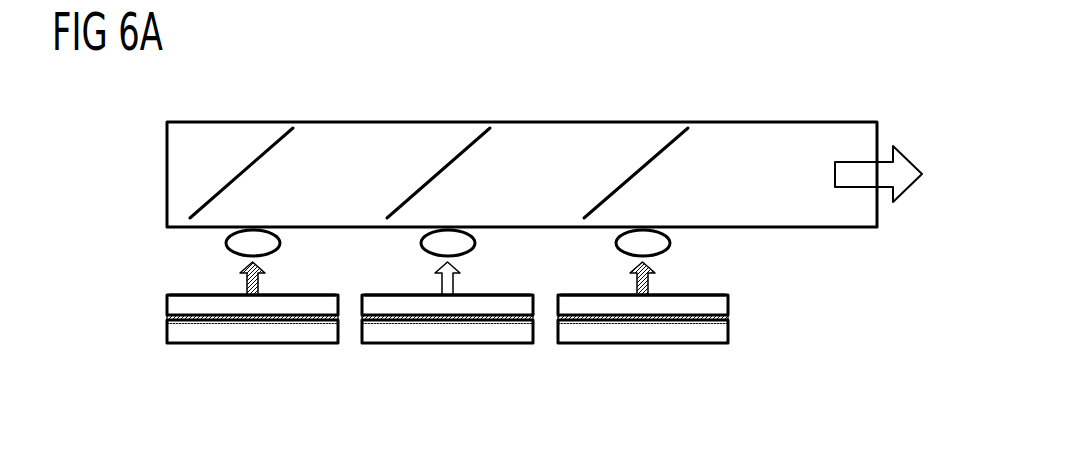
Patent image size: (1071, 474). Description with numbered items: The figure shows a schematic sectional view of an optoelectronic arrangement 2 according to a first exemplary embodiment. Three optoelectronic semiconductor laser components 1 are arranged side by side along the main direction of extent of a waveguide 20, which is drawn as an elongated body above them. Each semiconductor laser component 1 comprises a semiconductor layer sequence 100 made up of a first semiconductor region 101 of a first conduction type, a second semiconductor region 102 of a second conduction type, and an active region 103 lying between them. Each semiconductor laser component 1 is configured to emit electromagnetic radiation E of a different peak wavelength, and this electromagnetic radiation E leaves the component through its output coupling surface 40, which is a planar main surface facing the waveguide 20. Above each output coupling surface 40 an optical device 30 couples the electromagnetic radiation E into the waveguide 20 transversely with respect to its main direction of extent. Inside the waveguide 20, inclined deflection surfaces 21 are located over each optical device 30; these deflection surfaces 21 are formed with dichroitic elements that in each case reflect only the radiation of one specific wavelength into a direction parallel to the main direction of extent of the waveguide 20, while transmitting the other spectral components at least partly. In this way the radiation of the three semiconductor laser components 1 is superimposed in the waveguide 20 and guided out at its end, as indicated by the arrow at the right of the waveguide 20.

The optoelectronic semiconductor laser component 1 is at (450, 340).
The optoelectronic arrangement 2 is at (544, 149).
The waveguide 20 is at (832, 130).
The deflection surface 21 is at (245, 172).
The optical device 30 is at (276, 244).
The output coupling surface 40 is at (184, 288).
The semiconductor layer sequence 100 is at (450, 362).
The first semiconductor region 101 is at (449, 386).
The second semiconductor region 102 is at (173, 307).
The active region 103 is at (172, 318).
The electromagnetic radiation E is at (454, 279).